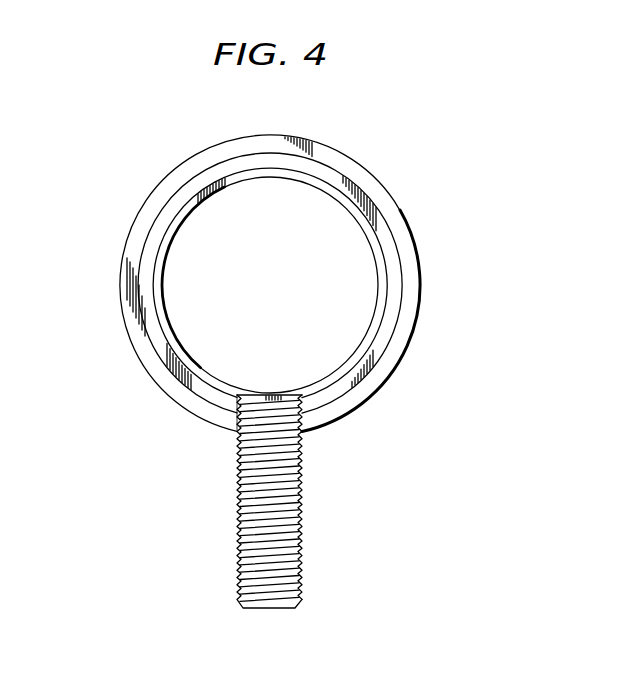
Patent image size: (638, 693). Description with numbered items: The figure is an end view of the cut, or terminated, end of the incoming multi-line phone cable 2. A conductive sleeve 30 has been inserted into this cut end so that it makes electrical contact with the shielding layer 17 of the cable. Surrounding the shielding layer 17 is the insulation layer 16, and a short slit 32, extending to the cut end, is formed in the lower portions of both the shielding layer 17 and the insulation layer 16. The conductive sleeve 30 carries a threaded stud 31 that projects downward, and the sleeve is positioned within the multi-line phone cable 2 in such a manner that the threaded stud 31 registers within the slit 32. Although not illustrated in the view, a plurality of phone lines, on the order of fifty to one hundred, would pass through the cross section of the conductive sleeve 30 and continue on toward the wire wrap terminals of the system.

The multi-line phone cable 2 is at (435, 230).
The insulation layer 16 is at (407, 302).
The shielding layer 17 is at (375, 352).
The conductive sleeve 30 is at (182, 223).
The threaded stud 31 is at (304, 550).
The slit 32 is at (235, 430).